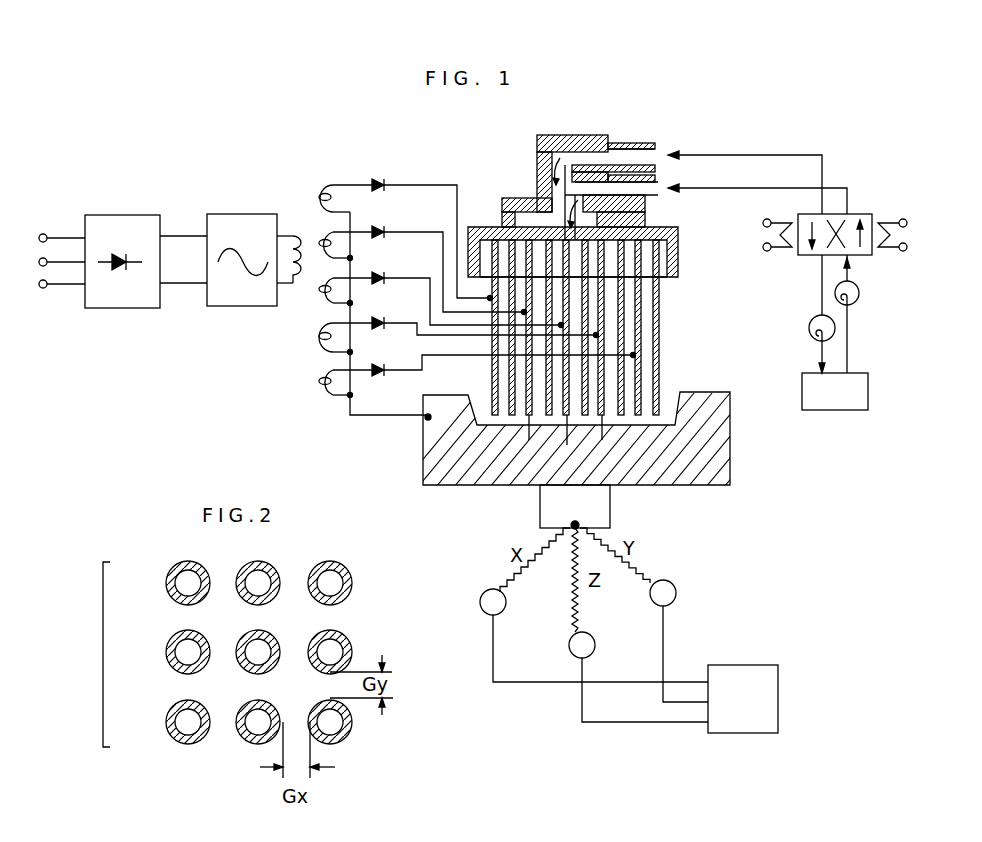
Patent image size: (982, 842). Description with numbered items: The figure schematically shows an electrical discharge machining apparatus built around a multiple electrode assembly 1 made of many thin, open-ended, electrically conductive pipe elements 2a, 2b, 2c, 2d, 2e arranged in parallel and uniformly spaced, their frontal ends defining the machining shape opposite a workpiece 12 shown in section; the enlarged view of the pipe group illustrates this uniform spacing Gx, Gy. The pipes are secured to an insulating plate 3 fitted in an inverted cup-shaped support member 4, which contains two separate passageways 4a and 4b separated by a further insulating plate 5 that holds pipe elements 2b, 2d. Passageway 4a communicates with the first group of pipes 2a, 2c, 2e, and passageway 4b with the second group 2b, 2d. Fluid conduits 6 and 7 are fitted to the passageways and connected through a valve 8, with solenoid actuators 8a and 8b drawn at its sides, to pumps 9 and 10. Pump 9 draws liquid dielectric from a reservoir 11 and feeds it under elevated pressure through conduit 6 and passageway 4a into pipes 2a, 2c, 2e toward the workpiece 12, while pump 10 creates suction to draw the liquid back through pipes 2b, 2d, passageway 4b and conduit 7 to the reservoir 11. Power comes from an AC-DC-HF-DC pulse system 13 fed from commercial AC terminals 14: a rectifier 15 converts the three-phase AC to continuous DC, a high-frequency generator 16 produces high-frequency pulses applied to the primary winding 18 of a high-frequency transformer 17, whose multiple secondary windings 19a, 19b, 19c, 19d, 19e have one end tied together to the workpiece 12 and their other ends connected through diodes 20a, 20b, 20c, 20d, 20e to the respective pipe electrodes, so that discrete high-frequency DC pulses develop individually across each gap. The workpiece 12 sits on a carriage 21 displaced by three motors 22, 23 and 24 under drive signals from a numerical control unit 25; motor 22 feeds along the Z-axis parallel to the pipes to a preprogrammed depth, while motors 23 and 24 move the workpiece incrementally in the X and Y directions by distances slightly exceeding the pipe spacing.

In FIG. 1, the multiple electrode assembly 1 is at (686, 334).
In FIG. 2, the multiple electrode assembly 1 is at (167, 646).
In FIG. 1, the pipe element 2a is at (486, 368).
In FIG. 1, the pipe element 2b is at (529, 440).
In FIG. 1, the pipe element 2c is at (564, 438).
In FIG. 1, the pipe element 2d is at (602, 440).
In FIG. 1, the pipe element 2e is at (675, 393).
In FIG. 1, the plate 3 is at (670, 276).
In FIG. 1, the support member 4 is at (678, 238).
In FIG. 1, the passageway 4a is at (570, 200).
In FIG. 1, the passageway 4b is at (556, 166).
In FIG. 1, the insulating plate 5 is at (645, 228).
In FIG. 1, the fluid conduit 6 is at (655, 180).
In FIG. 1, the fluid conduit 7 is at (640, 143).
In FIG. 1, the valve 8 is at (858, 214).
In FIG. 1, the solenoid 8a is at (762, 230).
In FIG. 1, the solenoid 8b is at (908, 232).
In FIG. 1, the pump 9 is at (860, 293).
In FIG. 1, the pump 10 is at (812, 318).
In FIG. 1, the reservoir 11 is at (868, 396).
In FIG. 1, the workpiece 12 is at (732, 456).
In FIG. 1, the AC-DC-HF-DC pulse system 13 is at (207, 169).
In FIG. 1, the output terminals 14 is at (43, 234).
In FIG. 1, the rectifier 15 is at (118, 215).
In FIG. 1, the high-frequency generator 16 is at (240, 214).
In FIG. 1, the high-frequency transformer 17 is at (305, 197).
In FIG. 1, the primary winding 18 is at (293, 233).
In FIG. 1, the secondary winding 19a is at (333, 190).
In FIG. 1, the secondary winding 19b is at (343, 240).
In FIG. 1, the secondary winding 19c is at (320, 292).
In FIG. 1, the secondary winding 19d is at (320, 338).
In FIG. 1, the secondary winding 19e is at (320, 383).
In FIG. 1, the diode 20a is at (388, 182).
In FIG. 1, the diode 20b is at (388, 229).
In FIG. 1, the diode 20c is at (380, 274).
In FIG. 1, the diode 20d is at (377, 319).
In FIG. 1, the diode 20e is at (368, 366).
In FIG. 1, the carriage 21 is at (612, 518).
In FIG. 1, the motor 22 is at (595, 645).
In FIG. 1, the motor 23 is at (506, 605).
In FIG. 1, the motor 24 is at (676, 595).
In FIG. 1, the numerical control unit 25 is at (738, 733).